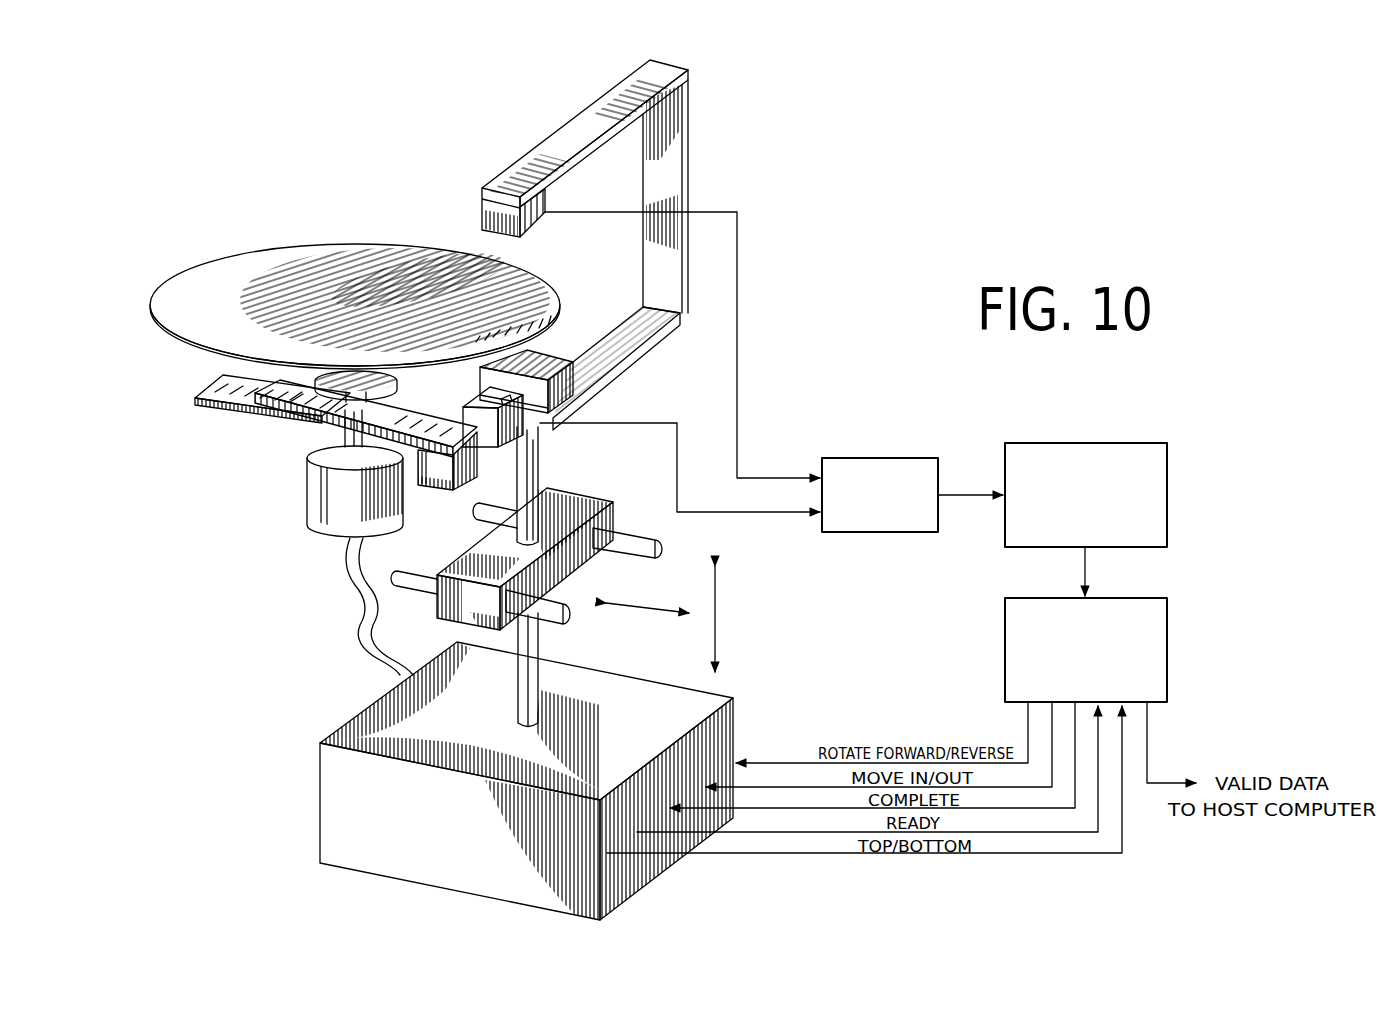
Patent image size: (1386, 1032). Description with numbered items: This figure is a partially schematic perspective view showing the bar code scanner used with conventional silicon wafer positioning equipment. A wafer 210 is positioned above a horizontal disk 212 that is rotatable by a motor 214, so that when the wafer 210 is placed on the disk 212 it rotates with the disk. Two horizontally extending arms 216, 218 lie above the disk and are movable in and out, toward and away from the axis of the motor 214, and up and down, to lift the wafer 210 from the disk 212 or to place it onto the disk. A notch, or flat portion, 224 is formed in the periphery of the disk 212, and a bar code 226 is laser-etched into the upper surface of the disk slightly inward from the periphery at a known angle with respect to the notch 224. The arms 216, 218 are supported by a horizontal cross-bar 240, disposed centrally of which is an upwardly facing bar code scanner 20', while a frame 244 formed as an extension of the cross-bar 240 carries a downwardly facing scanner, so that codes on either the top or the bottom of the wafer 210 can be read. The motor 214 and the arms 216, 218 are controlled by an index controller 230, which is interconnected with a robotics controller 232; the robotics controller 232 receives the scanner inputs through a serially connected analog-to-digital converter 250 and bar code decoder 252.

The wafer 210 is at (290, 277).
The notch 224 is at (142, 313).
The bar code 226 is at (493, 337).
The arm 218 is at (556, 365).
The frame 244 is at (673, 182).
The horizontal disk 212 is at (250, 412).
The arm 216 is at (332, 422).
The motor 214 is at (322, 505).
The horizontal cross-bar 240 is at (435, 478).
The bar code scanner 20' is at (533, 431).
The analog-to-digital converter 250 is at (872, 462).
The bar code decoder 252 is at (1066, 455).
The robotics controller 232 is at (1158, 612).
The index controller 230 is at (360, 853).